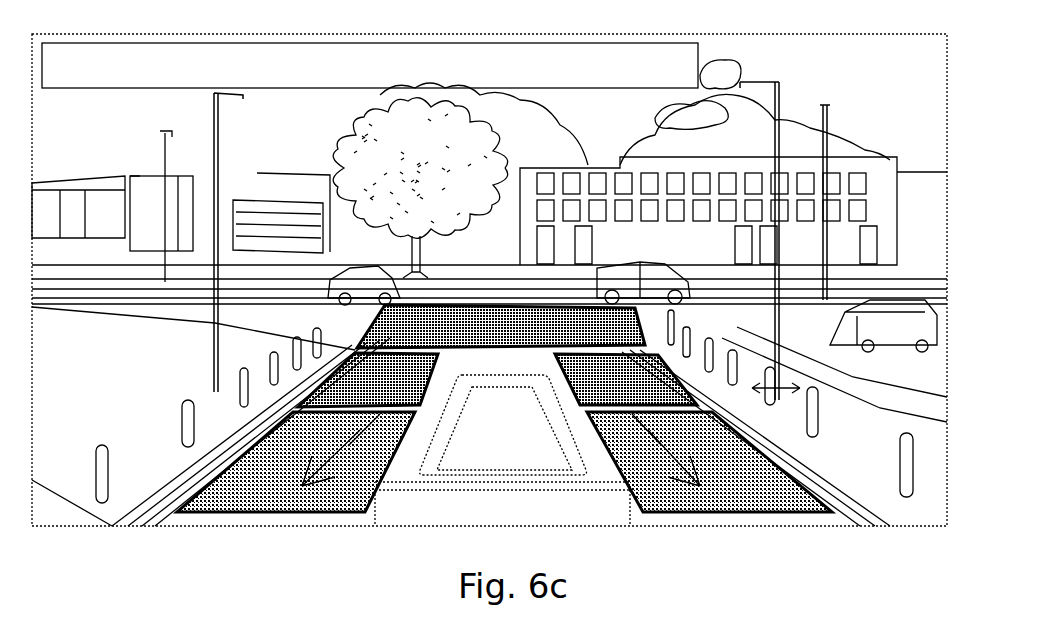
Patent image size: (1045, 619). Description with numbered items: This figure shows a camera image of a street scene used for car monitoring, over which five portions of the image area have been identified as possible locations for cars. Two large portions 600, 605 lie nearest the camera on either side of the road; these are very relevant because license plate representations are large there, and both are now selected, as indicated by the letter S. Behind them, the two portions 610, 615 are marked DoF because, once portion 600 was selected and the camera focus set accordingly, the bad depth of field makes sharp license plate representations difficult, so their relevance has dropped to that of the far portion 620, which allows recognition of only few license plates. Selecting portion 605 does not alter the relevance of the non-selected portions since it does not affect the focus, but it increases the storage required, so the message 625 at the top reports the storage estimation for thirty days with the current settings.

The portion 600 is at (265, 500).
The portion 605 is at (757, 503).
The portion 610 is at (423, 397).
The portion 615 is at (568, 378).
The portion 620 is at (447, 303).
The message 625 is at (155, 43).